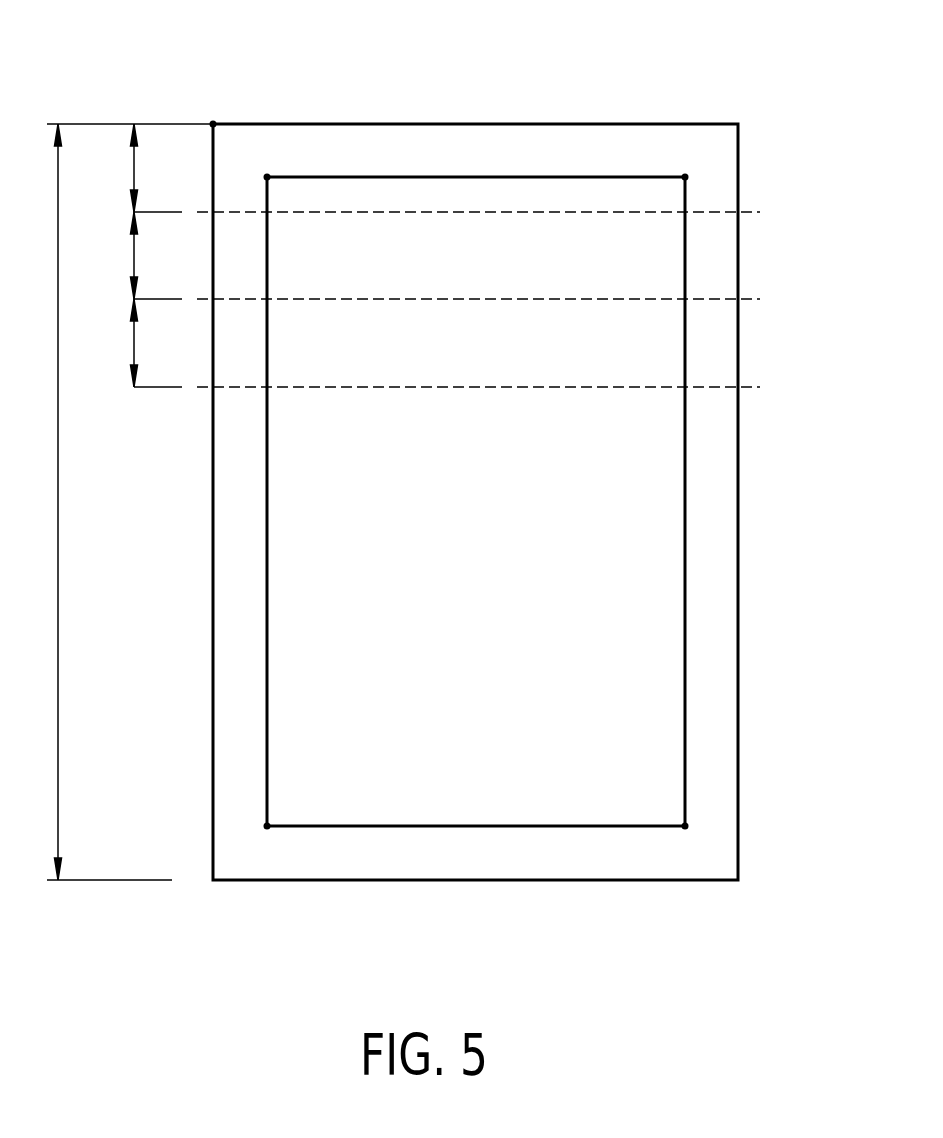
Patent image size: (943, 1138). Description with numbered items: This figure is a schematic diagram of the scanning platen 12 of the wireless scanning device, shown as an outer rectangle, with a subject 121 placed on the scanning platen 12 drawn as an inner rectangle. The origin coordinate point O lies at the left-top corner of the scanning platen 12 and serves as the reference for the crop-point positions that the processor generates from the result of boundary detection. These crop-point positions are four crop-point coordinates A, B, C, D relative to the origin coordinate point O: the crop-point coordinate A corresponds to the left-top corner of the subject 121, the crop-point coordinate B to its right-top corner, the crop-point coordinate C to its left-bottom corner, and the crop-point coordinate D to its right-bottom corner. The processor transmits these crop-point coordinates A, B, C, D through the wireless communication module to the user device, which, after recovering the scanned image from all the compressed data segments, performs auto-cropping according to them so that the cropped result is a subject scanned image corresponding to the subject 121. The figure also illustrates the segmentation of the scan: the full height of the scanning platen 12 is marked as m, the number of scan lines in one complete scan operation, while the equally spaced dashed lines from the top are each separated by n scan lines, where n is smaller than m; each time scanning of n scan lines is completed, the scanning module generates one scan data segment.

The scanning platen 12 is at (713, 342).
The subject 121 is at (665, 450).
The origin coordinate point O is at (213, 124).
The crop-point coordinate A is at (267, 177).
The crop-point coordinate B is at (685, 178).
The crop-point coordinate C is at (267, 826).
The crop-point coordinate D is at (685, 826).
The scan lines of one scan operation m is at (44, 502).
The scan lines per scan data segment n is at (122, 255).